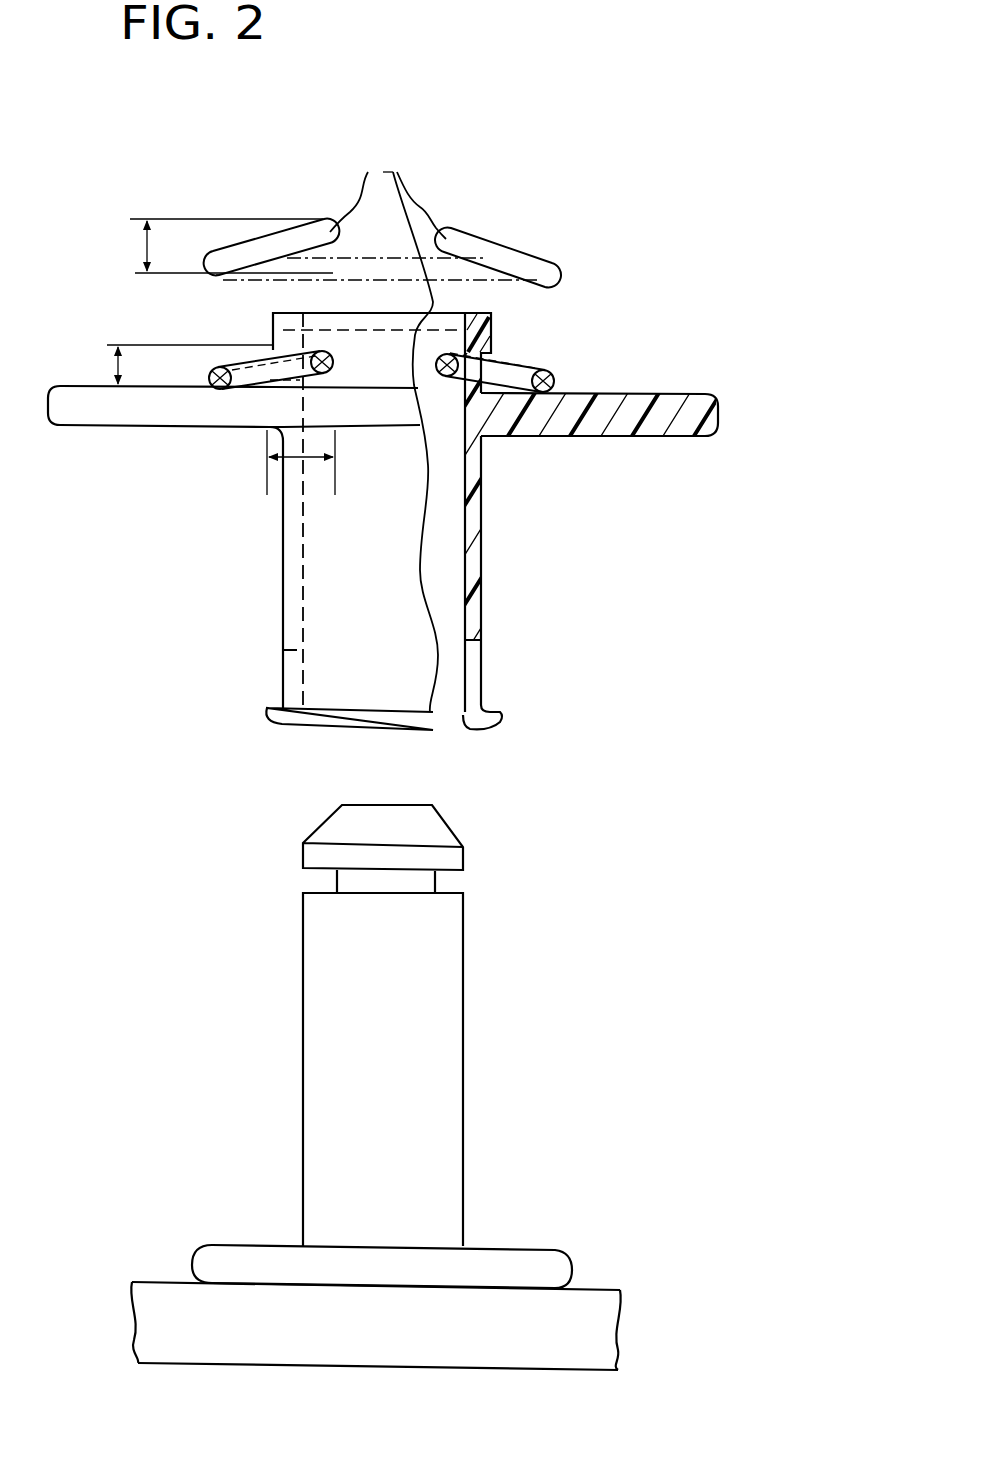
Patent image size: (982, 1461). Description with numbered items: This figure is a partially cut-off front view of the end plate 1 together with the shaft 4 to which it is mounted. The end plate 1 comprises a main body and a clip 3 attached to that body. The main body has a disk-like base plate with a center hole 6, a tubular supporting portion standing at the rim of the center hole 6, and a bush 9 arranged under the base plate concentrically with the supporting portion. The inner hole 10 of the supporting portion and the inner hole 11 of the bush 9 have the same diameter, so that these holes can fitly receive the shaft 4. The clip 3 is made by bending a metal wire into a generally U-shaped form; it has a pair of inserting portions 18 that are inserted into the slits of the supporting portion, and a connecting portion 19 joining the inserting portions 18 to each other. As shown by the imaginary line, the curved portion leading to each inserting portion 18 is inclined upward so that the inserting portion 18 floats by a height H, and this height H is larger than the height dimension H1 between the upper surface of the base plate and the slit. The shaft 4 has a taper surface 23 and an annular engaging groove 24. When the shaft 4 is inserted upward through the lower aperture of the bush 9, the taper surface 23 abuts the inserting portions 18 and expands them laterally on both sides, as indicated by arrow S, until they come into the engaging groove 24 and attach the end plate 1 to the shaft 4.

The end plate 1 is at (612, 366).
The clip 3 is at (542, 246).
The shaft 4 is at (442, 1048).
The center hole 6 is at (466, 433).
The bush 9 is at (478, 542).
The inner hole 10 is at (462, 320).
The inner hole 11 is at (462, 588).
The inserting portions 18 is at (326, 352).
The connecting portion 19 is at (213, 272).
The taper surface 23 is at (435, 828).
The annular engaging groove 24 is at (445, 880).
The height H is at (223, 246).
The height dimension H1 is at (175, 364).
The arrow S is at (306, 484).